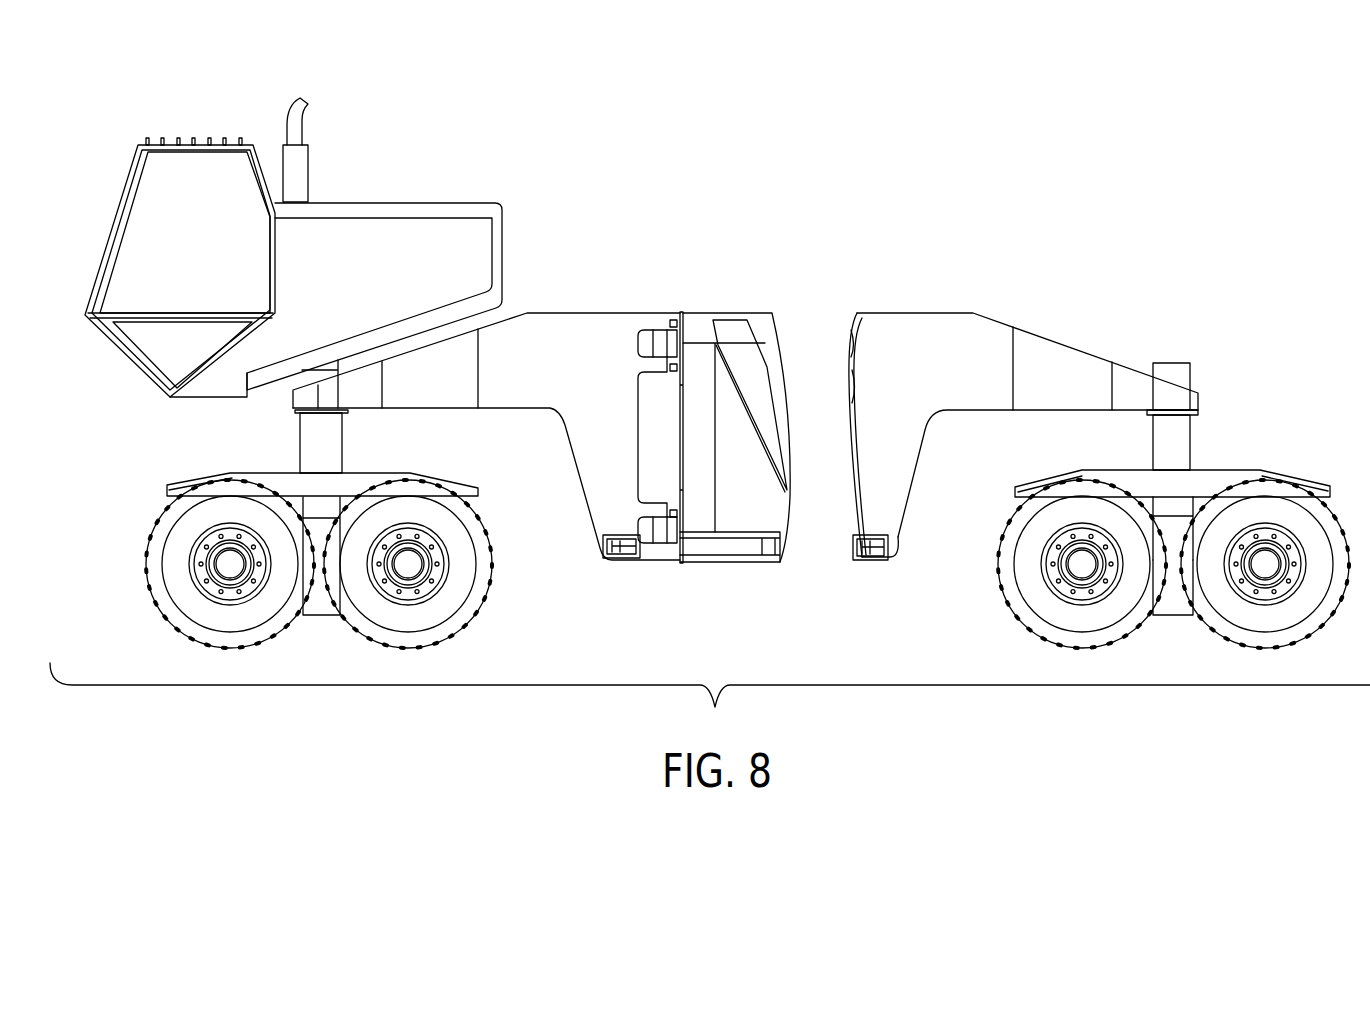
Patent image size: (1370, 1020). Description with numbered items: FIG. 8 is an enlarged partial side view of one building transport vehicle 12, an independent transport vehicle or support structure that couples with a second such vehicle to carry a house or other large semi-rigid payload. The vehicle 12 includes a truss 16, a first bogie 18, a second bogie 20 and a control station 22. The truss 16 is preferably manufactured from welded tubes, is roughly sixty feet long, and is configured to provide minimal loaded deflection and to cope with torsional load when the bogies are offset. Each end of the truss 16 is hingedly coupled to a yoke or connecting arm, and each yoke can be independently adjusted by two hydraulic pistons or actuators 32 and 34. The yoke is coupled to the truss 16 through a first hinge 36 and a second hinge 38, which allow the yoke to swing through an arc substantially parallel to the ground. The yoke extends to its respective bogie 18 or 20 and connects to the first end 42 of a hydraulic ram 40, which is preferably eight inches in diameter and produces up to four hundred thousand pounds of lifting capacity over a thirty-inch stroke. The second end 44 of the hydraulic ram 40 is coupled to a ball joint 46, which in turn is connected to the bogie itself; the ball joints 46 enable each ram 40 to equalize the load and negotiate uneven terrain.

The first independent transport vehicle 12 is at (741, 398).
The truss 16 is at (727, 314).
The first bogie 18 is at (1295, 475).
The second bogie 20 is at (378, 472).
The control station 22 is at (420, 230).
The hydraulic piston 32 is at (862, 553).
The hydraulic piston 34 is at (690, 548).
The first hinge 36 is at (665, 333).
The second hinge 38 is at (663, 535).
The hydraulic ram 40 is at (312, 437).
The first end of hydraulic ram 42 is at (1185, 372).
The second end of hydraulic ram 44 is at (1172, 545).
The ball joint 46 is at (1178, 530).